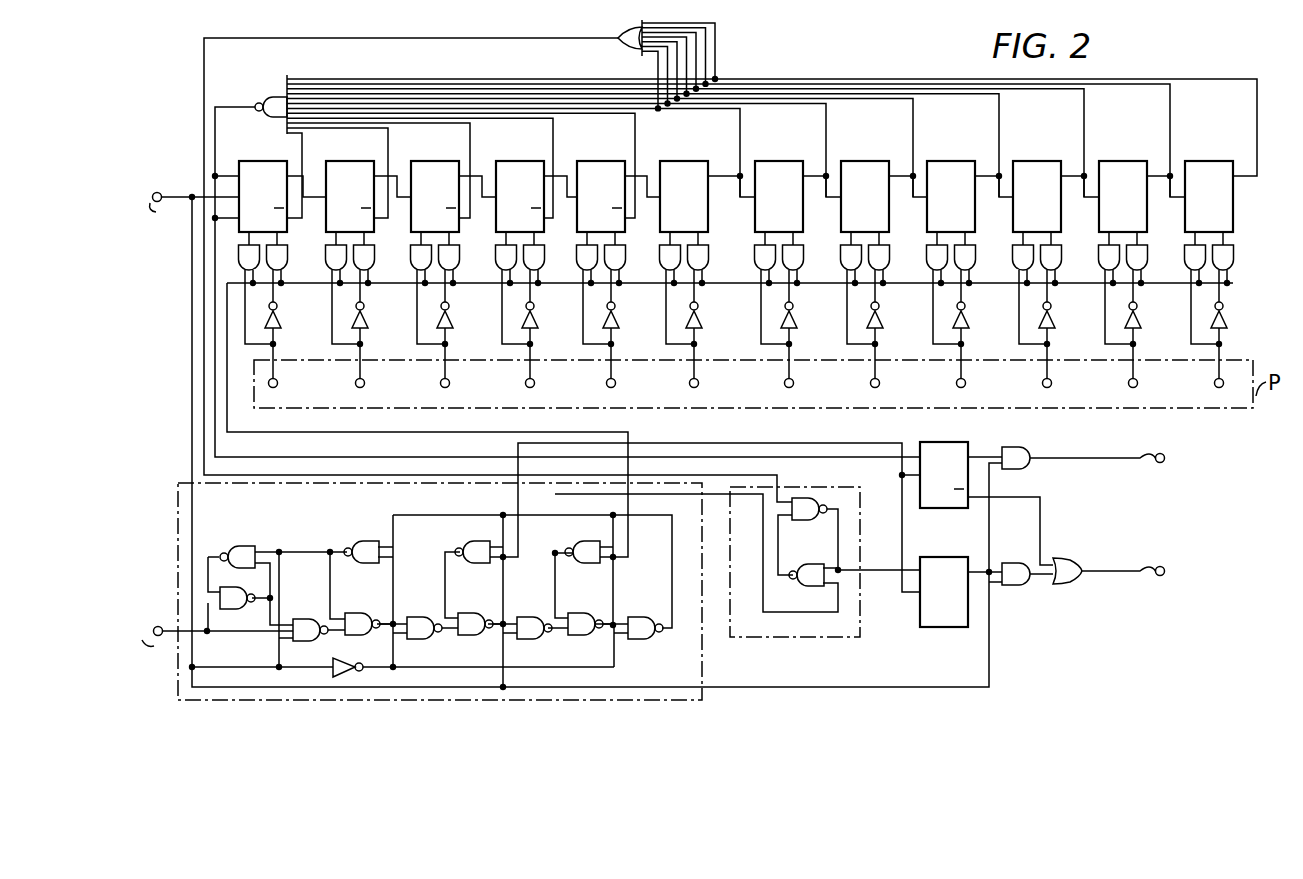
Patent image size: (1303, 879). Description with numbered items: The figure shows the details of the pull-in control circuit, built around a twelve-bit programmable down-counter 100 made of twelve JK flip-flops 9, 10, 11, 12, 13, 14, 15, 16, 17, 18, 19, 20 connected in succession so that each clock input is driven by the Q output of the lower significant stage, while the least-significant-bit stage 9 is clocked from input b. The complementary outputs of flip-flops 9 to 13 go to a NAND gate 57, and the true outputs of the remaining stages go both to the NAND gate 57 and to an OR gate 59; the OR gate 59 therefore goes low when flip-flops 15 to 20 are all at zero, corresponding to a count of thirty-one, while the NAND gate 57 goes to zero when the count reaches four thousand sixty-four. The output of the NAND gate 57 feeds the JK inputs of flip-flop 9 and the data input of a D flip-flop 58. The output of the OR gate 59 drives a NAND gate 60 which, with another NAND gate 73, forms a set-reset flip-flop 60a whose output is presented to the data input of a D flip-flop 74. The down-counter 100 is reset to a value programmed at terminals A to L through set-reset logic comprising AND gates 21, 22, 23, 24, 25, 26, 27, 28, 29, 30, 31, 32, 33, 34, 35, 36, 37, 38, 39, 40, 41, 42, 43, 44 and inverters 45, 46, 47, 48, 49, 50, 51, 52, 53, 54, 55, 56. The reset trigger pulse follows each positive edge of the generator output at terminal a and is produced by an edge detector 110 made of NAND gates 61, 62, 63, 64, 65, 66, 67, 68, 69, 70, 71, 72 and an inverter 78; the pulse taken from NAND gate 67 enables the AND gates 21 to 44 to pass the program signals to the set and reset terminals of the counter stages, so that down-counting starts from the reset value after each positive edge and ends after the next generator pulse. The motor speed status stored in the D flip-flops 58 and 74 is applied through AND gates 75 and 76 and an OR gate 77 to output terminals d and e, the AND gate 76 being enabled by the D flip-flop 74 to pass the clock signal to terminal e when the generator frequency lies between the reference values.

The JK flip-flop 9 is at (262, 161).
The JK flip-flop 10 is at (342, 162).
The JK flip-flop 11 is at (421, 162).
The JK flip-flop 12 is at (507, 162).
The JK flip-flop 13 is at (581, 162).
The JK flip-flop 14 is at (667, 162).
The JK flip-flop 15 is at (774, 162).
The JK flip-flop 16 is at (854, 162).
The JK flip-flop 17 is at (936, 162).
The JK flip-flop 18 is at (1036, 162).
The JK flip-flop 19 is at (1109, 162).
The JK flip-flop 20 is at (1192, 162).
The AND gate 21 is at (240, 263).
The AND gate 22 is at (287, 250).
The AND gate 23 is at (326, 255).
The AND gate 24 is at (374, 250).
The AND gate 25 is at (411, 255).
The AND gate 26 is at (459, 250).
The AND gate 27 is at (496, 255).
The AND gate 28 is at (544, 250).
The AND gate 29 is at (577, 255).
The AND gate 30 is at (625, 250).
The AND gate 31 is at (660, 255).
The AND gate 32 is at (709, 250).
The AND gate 33 is at (755, 255).
The AND gate 34 is at (804, 250).
The AND gate 35 is at (841, 255).
The AND gate 36 is at (890, 250).
The AND gate 37 is at (927, 255).
The AND gate 38 is at (975, 250).
The AND gate 39 is at (1013, 255).
The AND gate 40 is at (1061, 250).
The AND gate 41 is at (1099, 255).
The AND gate 42 is at (1147, 250).
The AND gate 43 is at (1185, 255).
The AND gate 44 is at (1235, 251).
The inverter 45 is at (278, 327).
The inverter 46 is at (365, 327).
The inverter 47 is at (450, 327).
The inverter 48 is at (535, 327).
The inverter 49 is at (616, 327).
The inverter 50 is at (699, 327).
The inverter 51 is at (794, 327).
The inverter 52 is at (880, 327).
The inverter 53 is at (966, 327).
The inverter 54 is at (1052, 327).
The inverter 55 is at (1138, 327).
The inverter 56 is at (1224, 327).
The NAND gate 57 is at (270, 97).
The D flip-flop 58 is at (940, 442).
The OR gate 59 is at (620, 30).
The NAND gate 60 is at (813, 498).
The set-reset flip-flop 60a is at (822, 637).
The NAND gate 61 is at (237, 609).
The NAND gate 62 is at (247, 546).
The NAND gate 63 is at (358, 613).
The NAND gate 64 is at (363, 542).
The NAND gate 65 is at (467, 613).
The NAND gate 66 is at (476, 541).
The NAND gate 67 is at (578, 613).
The NAND gate 68 is at (594, 541).
The NAND gate 69 is at (303, 619).
The NAND gate 70 is at (413, 617).
The NAND gate 71 is at (525, 617).
The NAND gate 72 is at (634, 617).
The NAND gate 73 is at (810, 564).
The D flip-flop 74 is at (941, 557).
The AND gate 75 is at (1013, 447).
The AND gate 76 is at (1010, 585).
The OR gate 77 is at (1073, 558).
The inverter 78 is at (345, 661).
The programmable down-counter 100 is at (878, 66).
The edge detector 110 is at (178, 520).